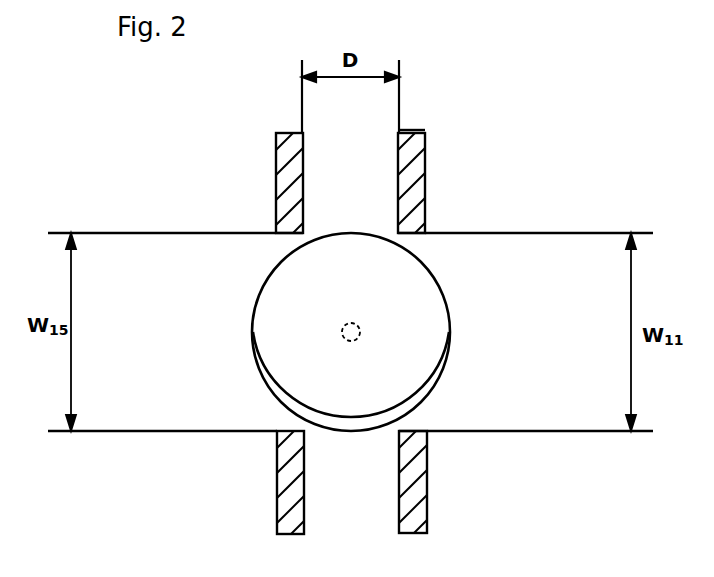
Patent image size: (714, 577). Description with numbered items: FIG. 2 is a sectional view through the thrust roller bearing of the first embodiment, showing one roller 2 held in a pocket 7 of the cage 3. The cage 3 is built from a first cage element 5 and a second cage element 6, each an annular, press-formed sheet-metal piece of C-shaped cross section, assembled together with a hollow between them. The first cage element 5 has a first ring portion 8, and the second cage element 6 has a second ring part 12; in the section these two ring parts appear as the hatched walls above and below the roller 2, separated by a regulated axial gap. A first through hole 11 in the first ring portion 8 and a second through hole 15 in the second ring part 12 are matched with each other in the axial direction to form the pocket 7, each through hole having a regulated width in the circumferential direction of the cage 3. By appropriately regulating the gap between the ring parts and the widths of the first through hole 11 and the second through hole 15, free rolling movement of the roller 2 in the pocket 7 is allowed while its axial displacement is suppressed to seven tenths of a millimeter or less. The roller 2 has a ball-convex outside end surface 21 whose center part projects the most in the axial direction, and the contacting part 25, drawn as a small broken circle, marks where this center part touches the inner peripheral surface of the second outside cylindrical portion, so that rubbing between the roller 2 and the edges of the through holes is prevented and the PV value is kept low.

The roller 2 is at (317, 298).
The cage 3 is at (413, 129).
The first cage element 5 is at (412, 168).
The second cage element 6 is at (291, 172).
The pocket 7 is at (417, 235).
The first ring portion 8 is at (412, 487).
The first through hole 11 is at (412, 428).
The second ring part 12 is at (287, 513).
The second through hole 15 is at (286, 234).
The outside end surface 21 is at (317, 367).
The contacting part 25 is at (356, 323).